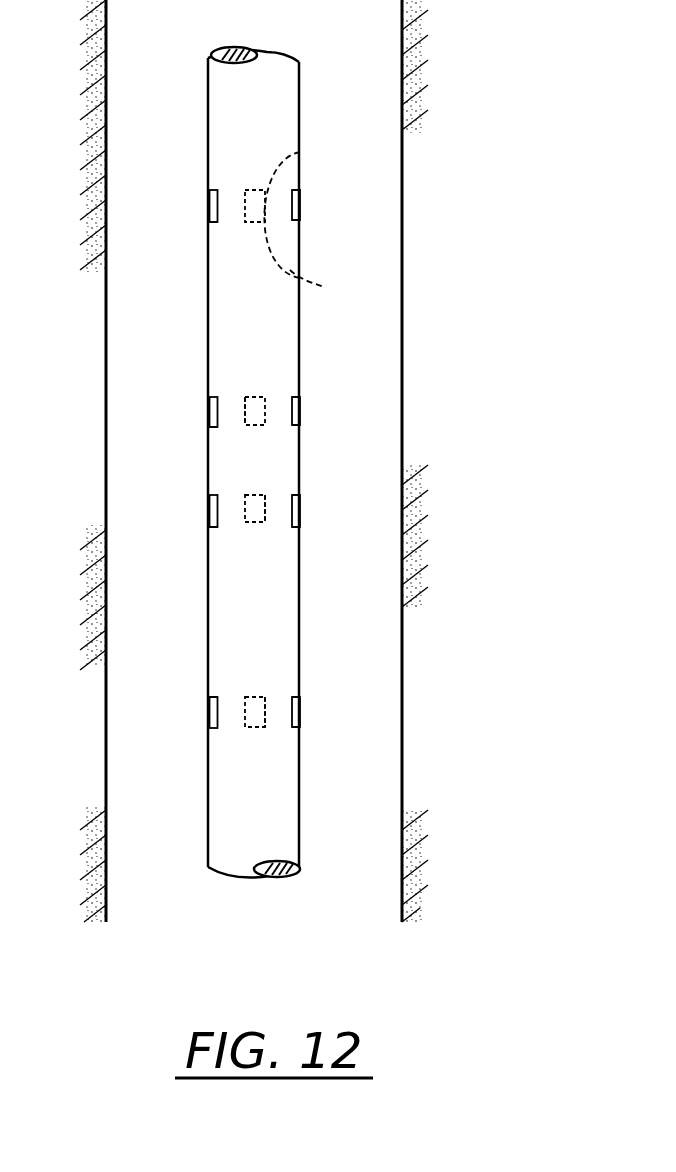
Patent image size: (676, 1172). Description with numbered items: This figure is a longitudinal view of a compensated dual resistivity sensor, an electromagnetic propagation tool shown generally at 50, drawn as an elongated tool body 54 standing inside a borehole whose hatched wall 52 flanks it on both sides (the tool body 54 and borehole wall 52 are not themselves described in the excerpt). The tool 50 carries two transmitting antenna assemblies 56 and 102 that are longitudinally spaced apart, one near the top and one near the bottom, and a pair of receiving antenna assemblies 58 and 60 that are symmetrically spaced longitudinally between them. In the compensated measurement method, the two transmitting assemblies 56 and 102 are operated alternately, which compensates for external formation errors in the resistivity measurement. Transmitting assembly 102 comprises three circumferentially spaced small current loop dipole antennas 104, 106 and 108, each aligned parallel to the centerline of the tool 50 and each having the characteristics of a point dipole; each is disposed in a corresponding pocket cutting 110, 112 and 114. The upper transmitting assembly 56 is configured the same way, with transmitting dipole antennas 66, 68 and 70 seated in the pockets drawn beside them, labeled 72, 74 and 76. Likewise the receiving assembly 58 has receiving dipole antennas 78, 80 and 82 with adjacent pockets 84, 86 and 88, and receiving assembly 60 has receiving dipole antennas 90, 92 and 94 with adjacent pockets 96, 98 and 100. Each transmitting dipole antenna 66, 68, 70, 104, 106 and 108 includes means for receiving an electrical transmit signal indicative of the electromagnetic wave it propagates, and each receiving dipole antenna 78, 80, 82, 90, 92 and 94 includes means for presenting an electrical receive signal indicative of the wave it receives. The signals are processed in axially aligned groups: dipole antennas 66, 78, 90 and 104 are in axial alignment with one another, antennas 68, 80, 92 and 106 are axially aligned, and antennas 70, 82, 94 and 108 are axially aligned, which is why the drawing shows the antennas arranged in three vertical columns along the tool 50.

The compensated dual resistivity sensor 50 is at (340, 462).
The wellbore 52 is at (393, 336).
The tubular body 54 is at (287, 93).
The transmitting antenna assembly 56 is at (308, 216).
The receiving antenna assembly 58 is at (308, 398).
The receiving antenna assembly 60 is at (310, 529).
The transmitting dipole antenna 66 is at (300, 152).
The transmitting dipole antenna 68 is at (208, 207).
The transmitting dipole antenna 70 is at (300, 201).
The first passage outlet 72 is at (329, 286).
The first left port lower lip 74 is at (213, 223).
The first right port lower lip 76 is at (299, 222).
The receiving dipole antenna 78 is at (257, 397).
The receiving dipole antenna 80 is at (210, 413).
The receiving dipole antenna 82 is at (298, 426).
The second passage branch 84 is at (245, 400).
The second left port lower lip 86 is at (213, 428).
The second right port upper edge 88 is at (294, 397).
The receiving dipole antenna 90 is at (247, 522).
The receiving dipole antenna 92 is at (210, 511).
The receiving dipole antenna 94 is at (300, 506).
The third passage branch 96 is at (260, 522).
The third left port lower lip 98 is at (213, 528).
The third right port lower lip 100 is at (297, 528).
The transmitting antenna assembly 102 is at (308, 718).
The small current loop dipole antenna 104 is at (252, 728).
The small current loop dipole antenna 106 is at (210, 707).
The small current loop dipole antenna 108 is at (300, 703).
The pocket cutting 110 is at (260, 728).
The pocket cutting 112 is at (215, 696).
The pocket cutting 114 is at (298, 728).